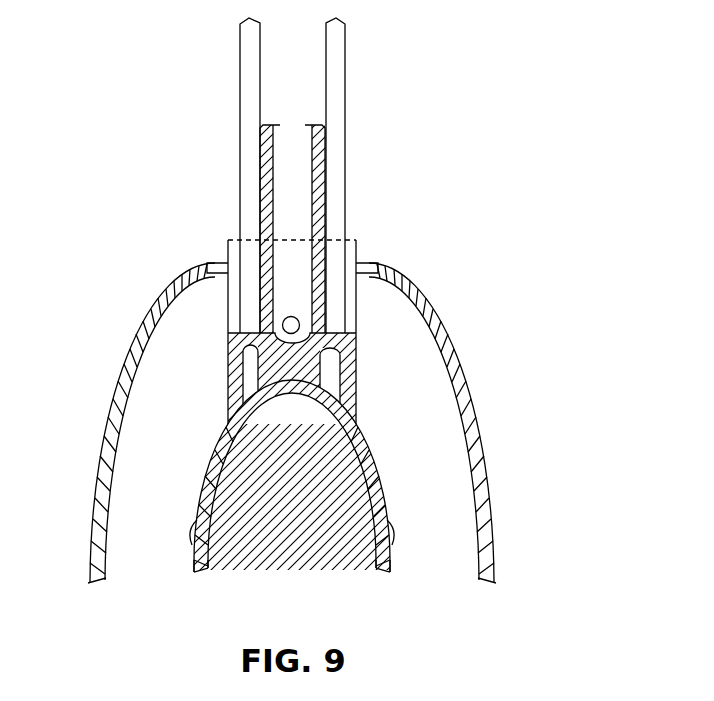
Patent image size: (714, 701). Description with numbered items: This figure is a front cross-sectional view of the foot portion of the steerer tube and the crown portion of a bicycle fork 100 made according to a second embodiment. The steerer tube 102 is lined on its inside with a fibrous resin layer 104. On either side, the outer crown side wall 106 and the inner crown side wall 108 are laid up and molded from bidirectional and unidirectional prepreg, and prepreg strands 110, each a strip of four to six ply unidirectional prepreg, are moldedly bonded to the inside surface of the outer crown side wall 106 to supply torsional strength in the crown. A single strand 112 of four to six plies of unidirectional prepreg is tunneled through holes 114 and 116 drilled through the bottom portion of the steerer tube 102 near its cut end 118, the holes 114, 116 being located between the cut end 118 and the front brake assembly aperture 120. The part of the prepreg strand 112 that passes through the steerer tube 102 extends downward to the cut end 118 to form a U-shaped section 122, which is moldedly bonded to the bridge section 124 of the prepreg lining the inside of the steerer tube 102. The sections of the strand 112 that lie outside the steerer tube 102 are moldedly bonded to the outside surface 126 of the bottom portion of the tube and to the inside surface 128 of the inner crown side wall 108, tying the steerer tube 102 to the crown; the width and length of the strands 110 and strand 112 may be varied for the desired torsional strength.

The bicycle fork 100 is at (488, 59).
The steerer tube 102 is at (345, 65).
The fibrous resin layer 104 is at (327, 168).
The outer crown side wall 106 is at (142, 328).
The inner crown side wall 108 is at (205, 512).
The prepreg strands 110 is at (128, 410).
The single strand of unidirectional prepreg 112 is at (212, 462).
The hole 114 is at (250, 332).
The hole 116 is at (335, 342).
The cut end 118 is at (347, 410).
The front brake assembly aperture 120 is at (357, 265).
The U-shaped section 122 is at (307, 357).
The bridge section 124 is at (300, 393).
The outside surface 126 is at (245, 380).
The inside surface 128 is at (350, 438).